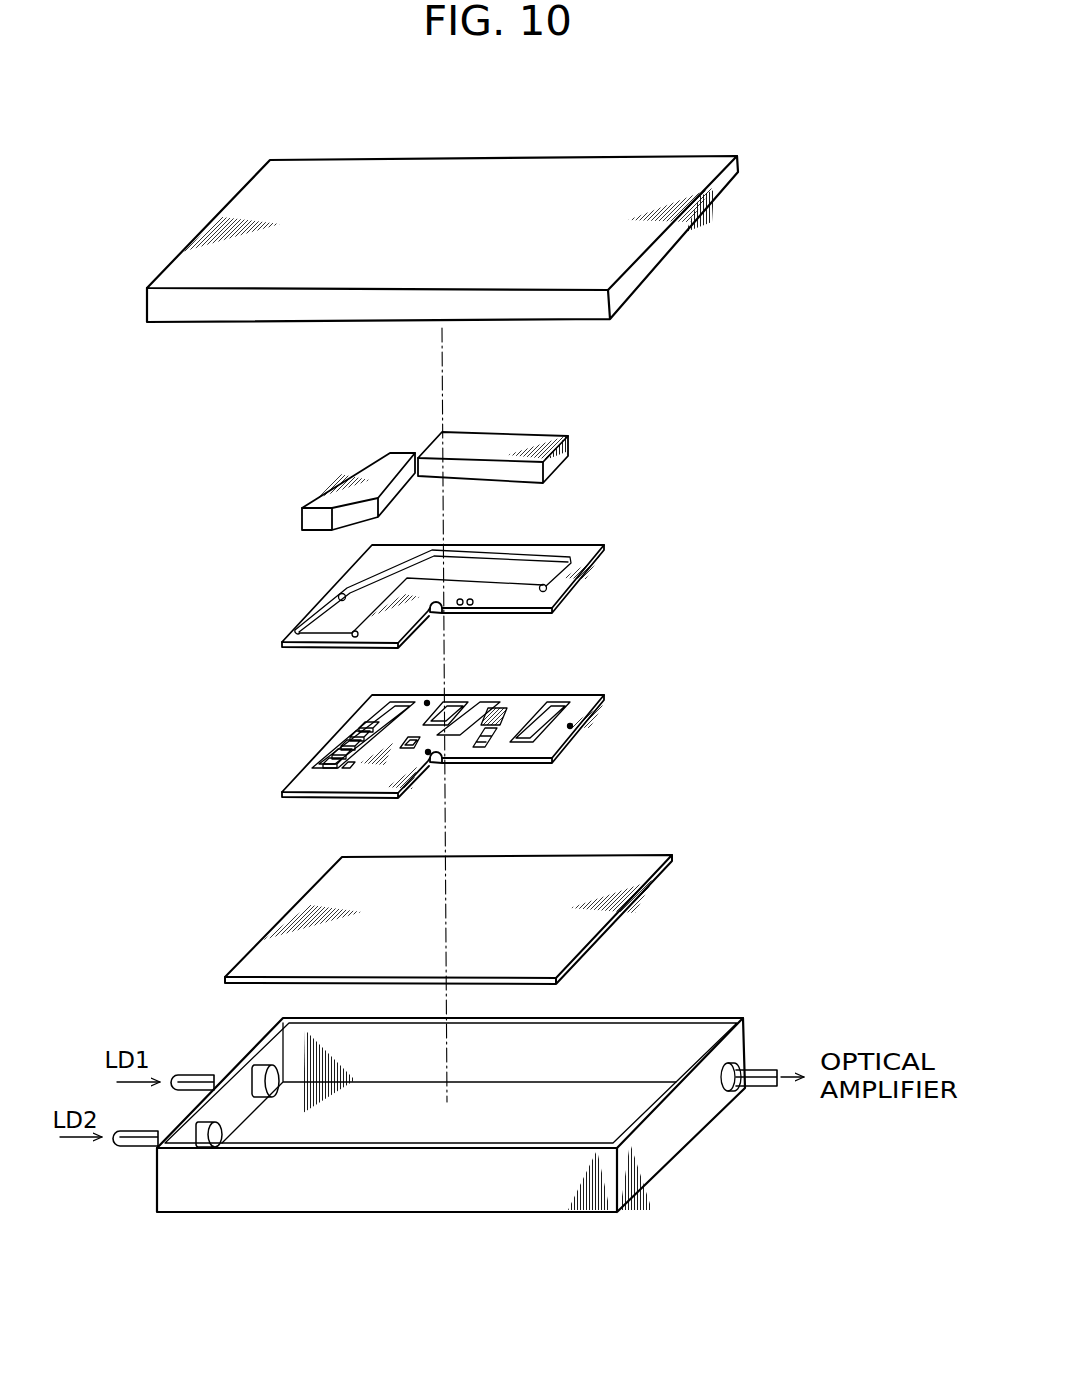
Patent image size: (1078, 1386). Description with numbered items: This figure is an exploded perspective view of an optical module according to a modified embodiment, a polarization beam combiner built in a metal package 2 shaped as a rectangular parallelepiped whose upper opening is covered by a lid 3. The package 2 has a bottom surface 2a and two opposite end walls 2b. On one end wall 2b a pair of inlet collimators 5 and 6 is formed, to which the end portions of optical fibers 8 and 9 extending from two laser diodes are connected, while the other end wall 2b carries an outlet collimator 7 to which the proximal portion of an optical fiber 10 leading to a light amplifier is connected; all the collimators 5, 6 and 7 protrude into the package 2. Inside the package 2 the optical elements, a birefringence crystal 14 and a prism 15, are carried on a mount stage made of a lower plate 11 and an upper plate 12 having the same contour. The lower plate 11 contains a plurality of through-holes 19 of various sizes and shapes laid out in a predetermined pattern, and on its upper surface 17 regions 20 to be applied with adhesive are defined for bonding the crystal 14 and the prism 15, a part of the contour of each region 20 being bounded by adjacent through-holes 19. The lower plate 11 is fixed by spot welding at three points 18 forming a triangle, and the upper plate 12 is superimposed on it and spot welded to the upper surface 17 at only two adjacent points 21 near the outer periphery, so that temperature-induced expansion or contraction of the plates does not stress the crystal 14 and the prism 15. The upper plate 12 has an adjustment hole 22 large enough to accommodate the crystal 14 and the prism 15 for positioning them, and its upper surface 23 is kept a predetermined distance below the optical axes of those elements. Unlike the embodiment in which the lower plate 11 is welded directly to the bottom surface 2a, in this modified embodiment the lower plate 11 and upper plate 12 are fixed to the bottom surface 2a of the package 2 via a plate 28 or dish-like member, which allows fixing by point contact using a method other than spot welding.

The package 2 is at (451, 1171).
The bottom surface 2a is at (425, 1123).
The end walls 2b is at (672, 1128).
The lid 3 is at (542, 173).
The inlet collimator 5 is at (262, 1072).
The inlet collimator 6 is at (222, 1133).
The outlet collimator 7 is at (735, 1060).
The optical fiber 8 is at (190, 1075).
The optical fiber 9 is at (128, 1149).
The optical fiber 10 is at (757, 1080).
The lower plate 11 is at (478, 738).
The upper plate 12 is at (451, 575).
The birefringence crystal 14 is at (517, 438).
The prism 15 is at (367, 473).
The upper surface 17 is at (580, 700).
The points 18 is at (425, 702).
The through-holes 19 is at (442, 710).
The regions to be applied with adhesive 20 is at (340, 742).
The points 21 is at (460, 605).
The adjustment hole 22 is at (338, 594).
The upper surface 23 is at (547, 552).
The plate 28 is at (540, 928).